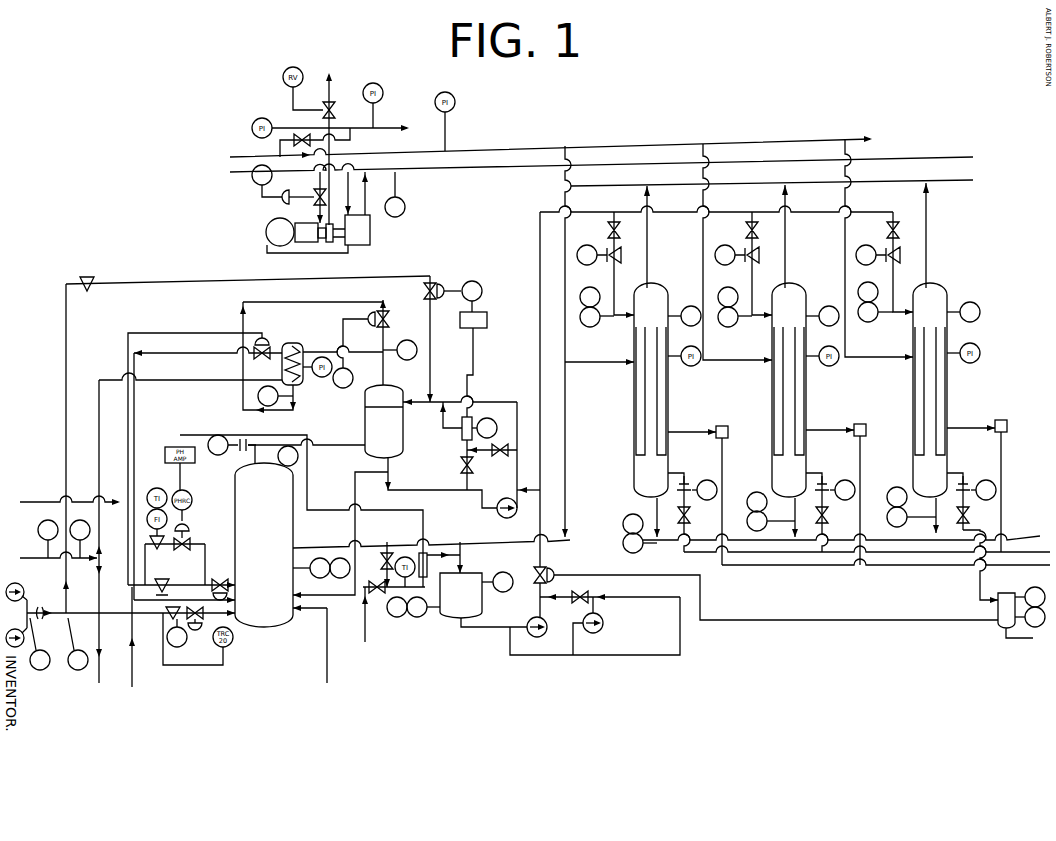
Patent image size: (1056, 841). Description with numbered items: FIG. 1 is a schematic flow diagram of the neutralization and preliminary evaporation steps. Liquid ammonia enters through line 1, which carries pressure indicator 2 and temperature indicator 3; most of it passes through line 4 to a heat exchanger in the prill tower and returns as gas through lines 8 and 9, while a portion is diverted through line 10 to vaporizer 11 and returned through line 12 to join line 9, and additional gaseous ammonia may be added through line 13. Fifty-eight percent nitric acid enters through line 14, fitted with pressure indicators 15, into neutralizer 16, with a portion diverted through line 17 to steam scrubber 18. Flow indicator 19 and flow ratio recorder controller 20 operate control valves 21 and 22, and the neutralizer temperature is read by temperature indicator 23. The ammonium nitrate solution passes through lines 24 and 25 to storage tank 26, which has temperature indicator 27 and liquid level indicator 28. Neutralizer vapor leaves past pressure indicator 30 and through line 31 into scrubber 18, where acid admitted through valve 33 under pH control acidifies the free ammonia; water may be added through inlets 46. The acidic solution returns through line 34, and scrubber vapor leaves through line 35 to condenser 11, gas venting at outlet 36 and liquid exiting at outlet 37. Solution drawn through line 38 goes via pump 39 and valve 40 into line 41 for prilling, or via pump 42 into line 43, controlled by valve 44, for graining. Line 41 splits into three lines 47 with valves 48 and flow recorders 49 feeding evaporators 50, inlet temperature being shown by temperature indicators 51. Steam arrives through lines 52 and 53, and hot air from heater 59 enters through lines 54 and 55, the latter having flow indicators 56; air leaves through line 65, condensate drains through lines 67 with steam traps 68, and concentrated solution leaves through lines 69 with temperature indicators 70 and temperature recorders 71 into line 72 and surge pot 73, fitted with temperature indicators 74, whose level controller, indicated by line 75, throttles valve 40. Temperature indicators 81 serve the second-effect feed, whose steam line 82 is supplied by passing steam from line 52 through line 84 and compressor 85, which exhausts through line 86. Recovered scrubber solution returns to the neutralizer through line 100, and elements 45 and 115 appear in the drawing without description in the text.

The line 1 is at (22, 556).
The pressure indicator 2 is at (48, 539).
The temperature indicator 3 is at (80, 539).
The line 4 is at (99, 689).
The line 8 is at (138, 683).
The line 9 is at (170, 582).
The line 10 is at (97, 463).
The vaporizer 11 is at (291, 344).
The line 12 is at (158, 351).
The line 13 is at (36, 501).
The line 14 is at (93, 627).
The pressure indicators 15 is at (59, 644).
The neutralizer 16 is at (236, 513).
The line 17 is at (66, 345).
The steam scrubber 18 is at (399, 437).
The flow indicator 19 is at (193, 639).
The flow ratio recorder controller 20 is at (253, 465).
The control valve 21 is at (229, 577).
The control valve 22 is at (180, 610).
The temperature indicator 23 is at (321, 568).
The line 24 is at (334, 546).
The line 25 is at (462, 552).
The storage tank 26 is at (458, 616).
The temperature indicator 27 is at (413, 607).
The liquid level indicator 28 is at (497, 582).
The pressure indicator 30 is at (288, 456).
The line 31 is at (345, 445).
The valve 33 is at (432, 287).
The line 34 is at (354, 493).
The line 35 is at (381, 369).
The gas outlet 36 is at (314, 292).
The liquid outlet 37 is at (269, 365).
The line 38 is at (490, 630).
The pump 39 is at (539, 637).
The valve 40 is at (546, 571).
The line 41 is at (539, 438).
The pump 42 is at (593, 635).
The line 43 is at (637, 602).
The valve 44 is at (575, 595).
The line 45 is at (488, 398).
The inlets 46 is at (470, 492).
The lines 47 is at (614, 291).
The valves 48 is at (621, 233).
The flow recorders 49 is at (738, 255).
The evaporators 50 is at (657, 291).
The temperature indicators 51 is at (736, 304).
The line 52 is at (512, 152).
The line 53 is at (705, 187).
The line 54 is at (1024, 541).
The line 55 is at (684, 477).
The flow indicators 56 is at (844, 490).
The heater 59 is at (566, 202).
The line 65 is at (648, 252).
The lines 67 is at (699, 428).
The steam traps 68 is at (727, 427).
The lines 69 is at (650, 497).
The temperature indicators 70 is at (765, 510).
The temperature recorders 71 is at (779, 530).
The line 72 is at (981, 534).
The surge pot 73 is at (1003, 594).
The temperature indicators 74 is at (1030, 607).
The line 75 is at (870, 626).
The temperature indicators 81 is at (963, 312).
The steam line 82 is at (939, 158).
The line 84 is at (316, 212).
The compressor 85 is at (371, 236).
The line 86 is at (333, 104).
The line 100 is at (326, 662).
The line 115 is at (1026, 562).